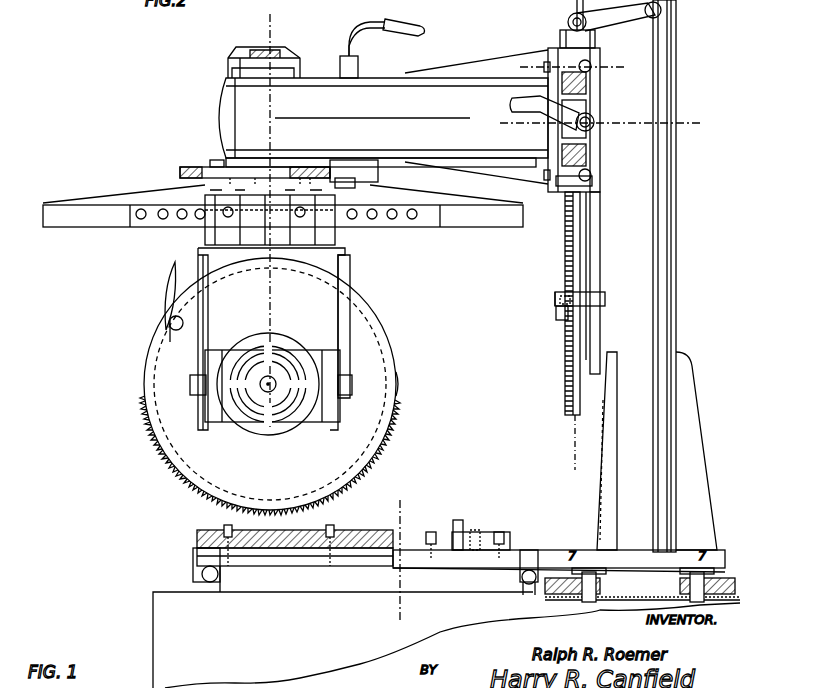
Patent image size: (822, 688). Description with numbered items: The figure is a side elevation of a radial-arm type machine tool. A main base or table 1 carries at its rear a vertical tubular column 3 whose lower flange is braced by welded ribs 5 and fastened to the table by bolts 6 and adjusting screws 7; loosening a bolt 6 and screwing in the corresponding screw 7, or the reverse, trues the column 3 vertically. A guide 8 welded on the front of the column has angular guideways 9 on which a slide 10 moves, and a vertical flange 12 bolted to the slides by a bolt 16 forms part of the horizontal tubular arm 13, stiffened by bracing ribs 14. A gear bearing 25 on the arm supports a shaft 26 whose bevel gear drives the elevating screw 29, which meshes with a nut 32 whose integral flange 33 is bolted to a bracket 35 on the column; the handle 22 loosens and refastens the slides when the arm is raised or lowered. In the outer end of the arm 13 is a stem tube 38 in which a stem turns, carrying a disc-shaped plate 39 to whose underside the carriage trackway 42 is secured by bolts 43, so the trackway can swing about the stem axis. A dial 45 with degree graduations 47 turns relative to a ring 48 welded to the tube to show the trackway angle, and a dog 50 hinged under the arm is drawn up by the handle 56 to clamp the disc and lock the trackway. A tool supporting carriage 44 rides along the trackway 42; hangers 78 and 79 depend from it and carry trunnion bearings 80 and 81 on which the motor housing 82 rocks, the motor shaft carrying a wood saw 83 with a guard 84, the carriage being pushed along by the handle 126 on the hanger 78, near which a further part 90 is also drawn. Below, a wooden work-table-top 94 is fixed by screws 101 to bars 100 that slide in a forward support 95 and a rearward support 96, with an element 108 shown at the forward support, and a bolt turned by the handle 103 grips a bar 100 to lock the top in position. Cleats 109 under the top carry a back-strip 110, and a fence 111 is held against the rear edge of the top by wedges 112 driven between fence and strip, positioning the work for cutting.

The main base or table 1 is at (162, 606).
The vertical column 3 is at (668, 246).
The ribs 5 is at (700, 460).
The bolts 6 is at (589, 602).
The adjusting screws 7 is at (503, 120).
The guide 8 is at (608, 258).
The guideways 9 is at (400, 504).
The slide 10 is at (582, 469).
The vertical flange 12 is at (556, 189).
The horizontal arm 13 is at (383, 118).
The bracing ribs 14 is at (458, 70).
The bolt 16 is at (548, 66).
The handle 22 is at (512, 104).
The gear bearing 25 is at (560, 36).
The shaft 26 is at (568, 16).
The elevating screw 29 is at (565, 255).
The nut 32 is at (556, 312).
The flange 33 is at (555, 296).
The bracket 35 is at (605, 299).
The stem tube 38 is at (256, 162).
The plate 39 is at (190, 172).
The carriage trackway 42 is at (160, 196).
The bolts 43 is at (215, 161).
The tool supporting carriage 44 is at (335, 241).
The circular dial 45 is at (282, 50).
The graduations 47 is at (228, 57).
The ring 48 is at (240, 70).
The dog 50 is at (372, 178).
The handle 56 is at (388, 22).
The hanger 78 is at (195, 262).
The hanger 79 is at (345, 270).
The trunnion bearing 80 is at (190, 384).
The trunnion bearing 81 is at (352, 384).
The motor housing 82 is at (316, 424).
The wood saw 83 is at (362, 452).
The guard 84 is at (398, 392).
The pivot pin 90 is at (169, 323).
The work-table-top 94 is at (272, 530).
The forward support 95 is at (222, 582).
The rearward support 96 is at (518, 583).
The bars 100 is at (193, 552).
The screws 101 is at (285, 538).
The handle 103 is at (526, 594).
The roller 108 is at (202, 574).
The cleats 109 is at (456, 556).
The back-strip 110 is at (510, 540).
The fence 111 is at (460, 520).
The wedges 112 is at (476, 534).
The handle 126 is at (165, 295).